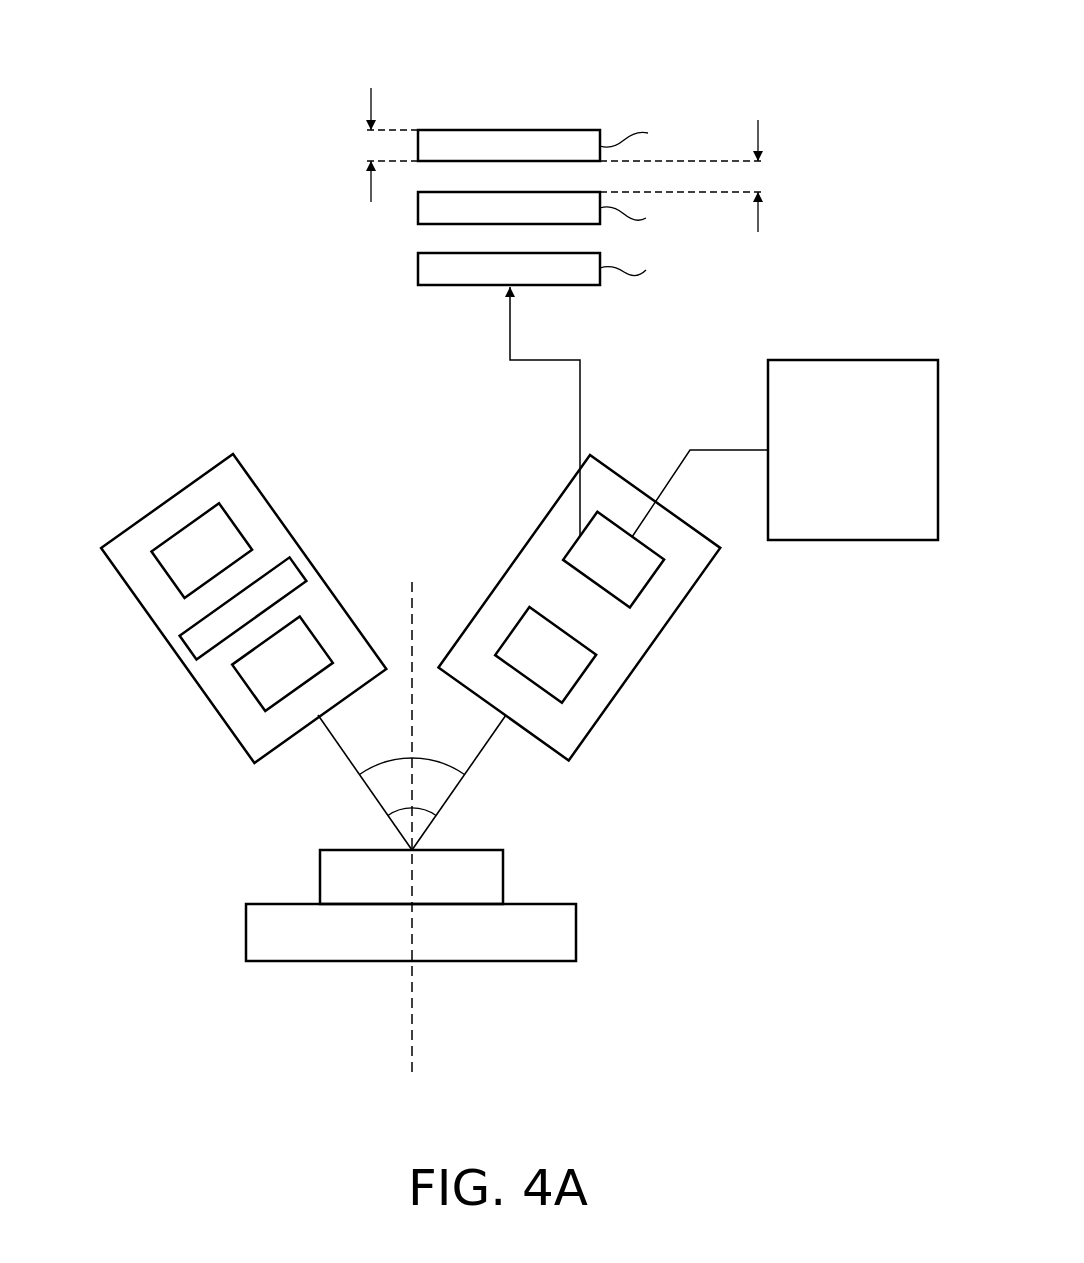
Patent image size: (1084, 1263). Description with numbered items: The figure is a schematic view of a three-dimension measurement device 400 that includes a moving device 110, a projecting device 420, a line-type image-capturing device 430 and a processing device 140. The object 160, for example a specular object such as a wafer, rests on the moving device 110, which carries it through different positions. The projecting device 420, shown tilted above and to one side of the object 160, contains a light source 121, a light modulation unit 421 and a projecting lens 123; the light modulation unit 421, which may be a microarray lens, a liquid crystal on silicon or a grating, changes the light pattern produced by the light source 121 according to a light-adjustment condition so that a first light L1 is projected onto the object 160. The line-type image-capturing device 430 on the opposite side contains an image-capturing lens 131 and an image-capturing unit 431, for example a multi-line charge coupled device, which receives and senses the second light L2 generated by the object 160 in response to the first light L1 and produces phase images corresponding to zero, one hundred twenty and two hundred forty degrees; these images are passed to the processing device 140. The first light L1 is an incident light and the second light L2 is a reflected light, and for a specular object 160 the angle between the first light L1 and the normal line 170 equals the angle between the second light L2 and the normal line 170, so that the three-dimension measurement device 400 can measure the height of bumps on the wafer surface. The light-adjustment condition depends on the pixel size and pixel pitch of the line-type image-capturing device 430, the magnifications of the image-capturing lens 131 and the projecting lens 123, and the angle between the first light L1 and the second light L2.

The three-dimension measurement device 400 is at (145, 46).
The projecting device 420 is at (165, 500).
The light source 121 is at (168, 577).
The light modulation unit 421 is at (183, 650).
The projecting lens 123 is at (247, 690).
The line-type image-capturing device 430 is at (623, 477).
The image-capturing unit 431 is at (648, 585).
The image-capturing lens 131 is at (585, 680).
The processing device 140 is at (768, 362).
The object 160 is at (503, 877).
The moving device 110 is at (576, 932).
The normal line 170 is at (412, 1027).
The first light L1 is at (338, 750).
The second light L2 is at (485, 750).